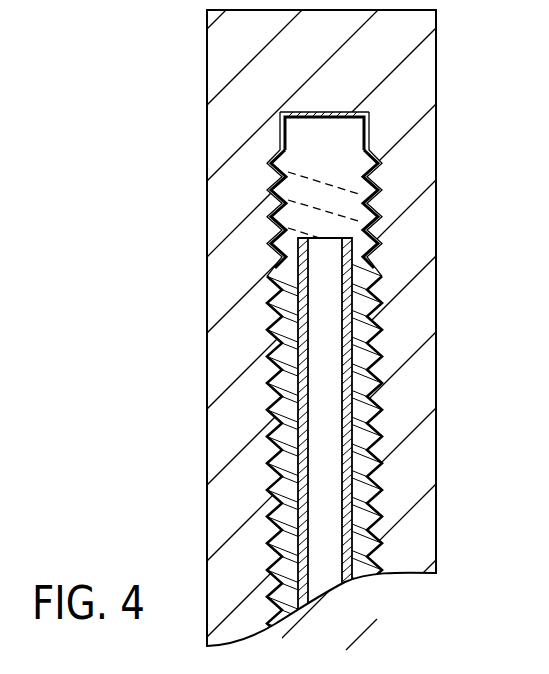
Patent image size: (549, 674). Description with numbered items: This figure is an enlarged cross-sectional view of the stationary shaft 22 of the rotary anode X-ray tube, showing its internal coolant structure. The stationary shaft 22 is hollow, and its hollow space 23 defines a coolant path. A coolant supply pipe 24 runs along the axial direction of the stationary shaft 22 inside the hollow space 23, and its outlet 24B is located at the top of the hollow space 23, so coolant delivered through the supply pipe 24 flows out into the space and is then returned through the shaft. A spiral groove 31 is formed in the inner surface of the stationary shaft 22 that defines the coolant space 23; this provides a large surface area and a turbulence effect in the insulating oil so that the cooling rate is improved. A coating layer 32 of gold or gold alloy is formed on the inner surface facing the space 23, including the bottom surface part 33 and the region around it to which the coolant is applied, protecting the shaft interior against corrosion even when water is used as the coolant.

The stationary shaft 22 is at (420, 93).
The hollow space 23 is at (300, 132).
The coolant supply pipe 24 is at (268, 318).
The outlet 24B is at (313, 238).
The spiral groove 31 is at (373, 345).
The coating layer 32 is at (373, 181).
The bottom surface part 33 is at (330, 111).